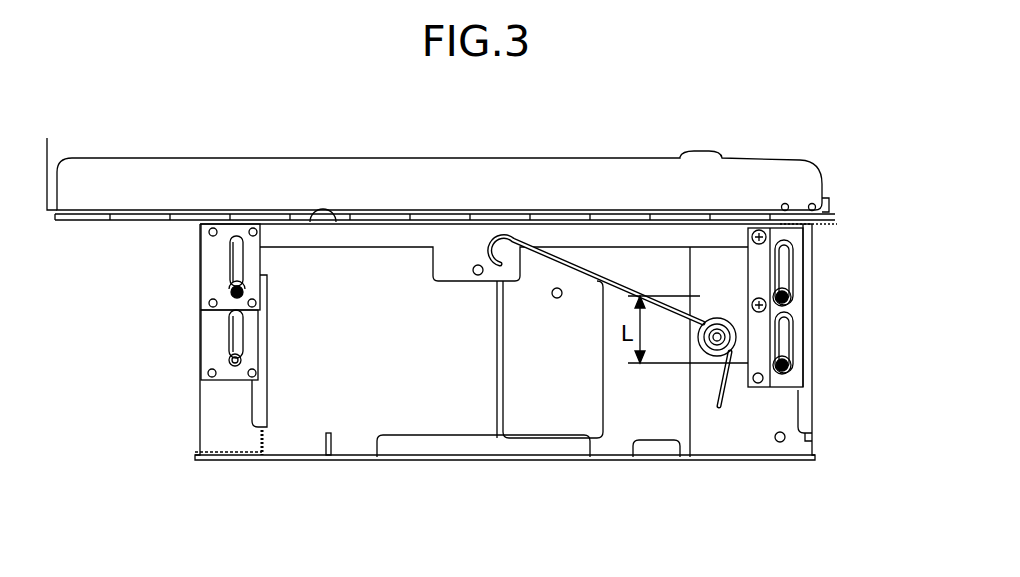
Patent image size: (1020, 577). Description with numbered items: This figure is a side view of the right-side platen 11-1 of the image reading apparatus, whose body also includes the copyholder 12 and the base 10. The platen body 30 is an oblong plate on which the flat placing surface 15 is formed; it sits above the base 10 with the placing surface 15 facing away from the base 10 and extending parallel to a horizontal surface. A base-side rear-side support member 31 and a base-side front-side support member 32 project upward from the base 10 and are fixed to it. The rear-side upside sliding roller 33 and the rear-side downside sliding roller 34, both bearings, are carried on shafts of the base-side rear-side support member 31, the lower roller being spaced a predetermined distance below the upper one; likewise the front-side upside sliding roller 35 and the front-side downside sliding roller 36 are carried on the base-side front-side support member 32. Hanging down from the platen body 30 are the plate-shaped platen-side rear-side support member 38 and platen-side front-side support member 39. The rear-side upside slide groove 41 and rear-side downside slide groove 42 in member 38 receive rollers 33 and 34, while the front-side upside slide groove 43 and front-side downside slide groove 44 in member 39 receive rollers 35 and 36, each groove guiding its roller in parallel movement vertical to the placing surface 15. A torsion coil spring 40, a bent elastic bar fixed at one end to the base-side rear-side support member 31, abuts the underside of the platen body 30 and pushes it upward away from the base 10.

The base 10 is at (352, 460).
The right-side platen 11-1 is at (388, 248).
The copyholder 12 is at (440, 160).
The placing surface 15 is at (330, 222).
The platen body 30 is at (422, 227).
The base-side rear-side support member 31 is at (814, 430).
The base-side front-side support member 32 is at (200, 390).
The rear-side upside sliding roller 33 is at (790, 296).
The rear-side downside sliding roller 34 is at (790, 365).
The front-side upside sliding roller 35 is at (229, 292).
The front-side downside sliding roller 36 is at (230, 362).
The platen-side rear-side support member 38 is at (806, 378).
The platen-side front-side support member 39 is at (270, 455).
The torsion coil spring 40 is at (650, 290).
The rear-side upside slide groove 41 is at (787, 253).
The rear-side downside slide groove 42 is at (788, 322).
The front-side upside slide groove 43 is at (232, 249).
The front-side downside slide groove 44 is at (232, 323).